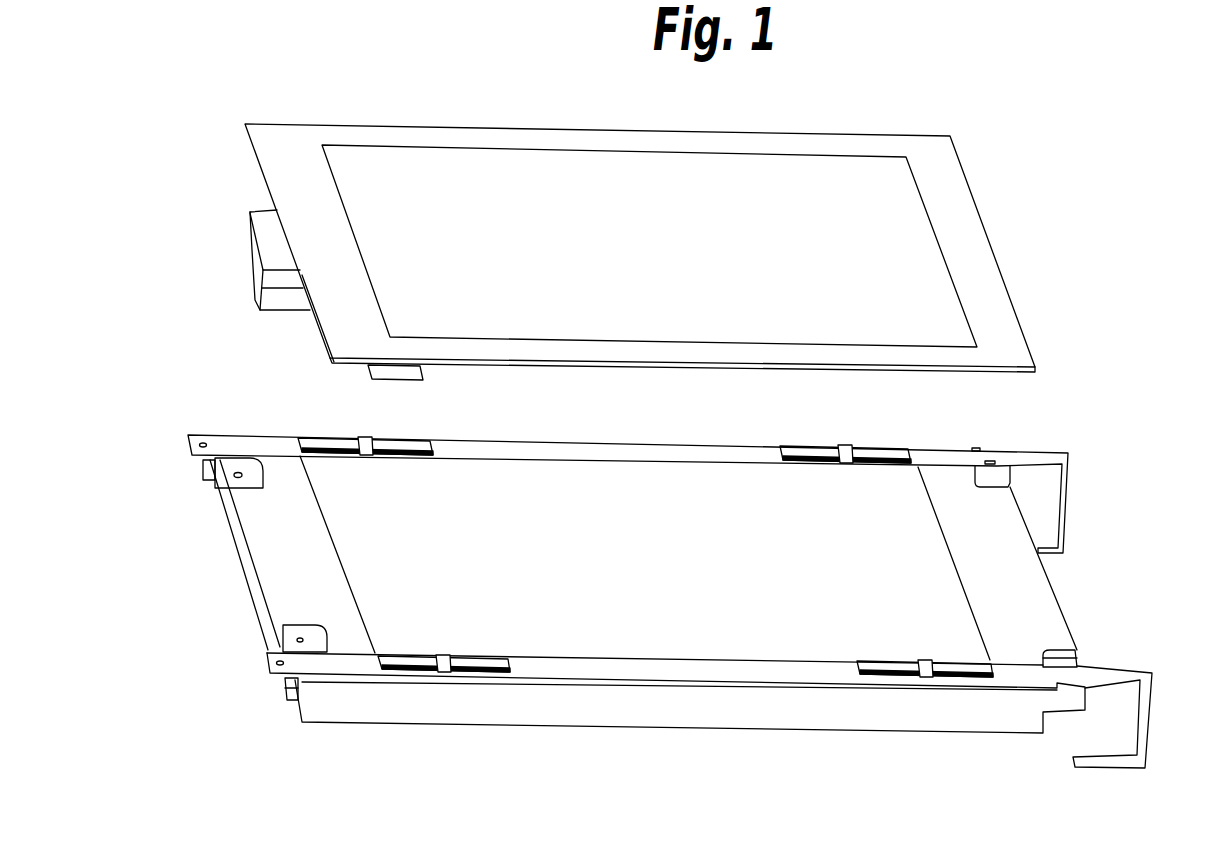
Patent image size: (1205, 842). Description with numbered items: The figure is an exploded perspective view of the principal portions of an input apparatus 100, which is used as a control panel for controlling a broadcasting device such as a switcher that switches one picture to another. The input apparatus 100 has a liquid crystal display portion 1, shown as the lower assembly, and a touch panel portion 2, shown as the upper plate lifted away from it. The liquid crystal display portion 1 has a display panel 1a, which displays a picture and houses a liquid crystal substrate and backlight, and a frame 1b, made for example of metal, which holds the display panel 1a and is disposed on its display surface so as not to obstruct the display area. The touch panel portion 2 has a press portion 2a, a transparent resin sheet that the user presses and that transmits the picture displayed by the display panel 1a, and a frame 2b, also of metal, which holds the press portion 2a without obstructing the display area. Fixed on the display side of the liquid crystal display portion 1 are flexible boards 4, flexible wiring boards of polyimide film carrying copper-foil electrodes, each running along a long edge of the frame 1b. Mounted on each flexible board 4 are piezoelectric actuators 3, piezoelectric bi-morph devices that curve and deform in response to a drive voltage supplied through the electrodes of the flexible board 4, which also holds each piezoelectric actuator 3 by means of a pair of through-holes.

The input apparatus 100 is at (1130, 158).
The liquid crystal display portion 1 is at (1092, 588).
The display panel 1a is at (610, 633).
The frame 1b is at (275, 550).
The touch panel portion 2 is at (1003, 188).
The press portion 2a is at (547, 322).
The frame 2b is at (287, 176).
The piezoelectric actuator 3 is at (330, 443).
The flexible board 4 is at (693, 450).